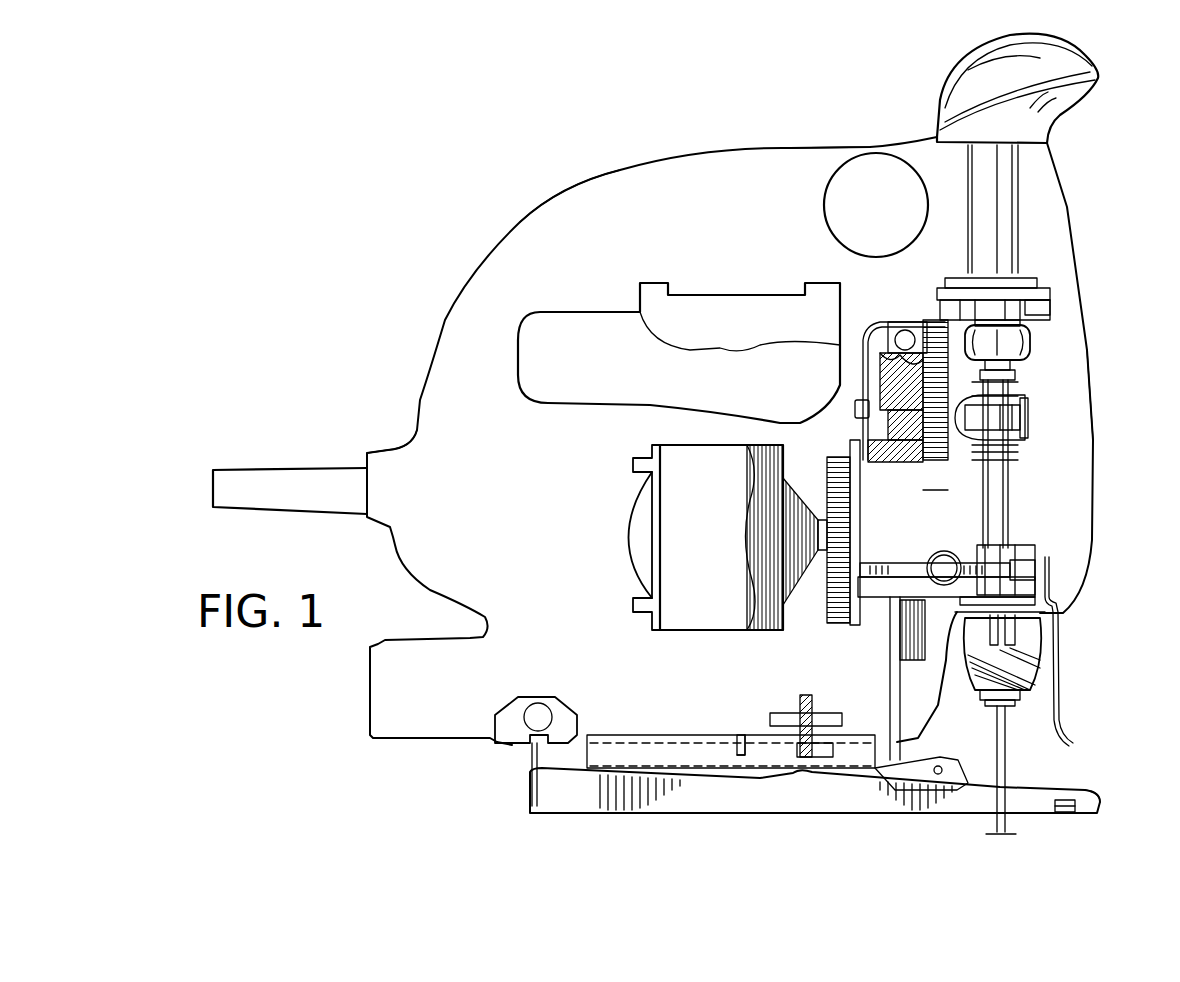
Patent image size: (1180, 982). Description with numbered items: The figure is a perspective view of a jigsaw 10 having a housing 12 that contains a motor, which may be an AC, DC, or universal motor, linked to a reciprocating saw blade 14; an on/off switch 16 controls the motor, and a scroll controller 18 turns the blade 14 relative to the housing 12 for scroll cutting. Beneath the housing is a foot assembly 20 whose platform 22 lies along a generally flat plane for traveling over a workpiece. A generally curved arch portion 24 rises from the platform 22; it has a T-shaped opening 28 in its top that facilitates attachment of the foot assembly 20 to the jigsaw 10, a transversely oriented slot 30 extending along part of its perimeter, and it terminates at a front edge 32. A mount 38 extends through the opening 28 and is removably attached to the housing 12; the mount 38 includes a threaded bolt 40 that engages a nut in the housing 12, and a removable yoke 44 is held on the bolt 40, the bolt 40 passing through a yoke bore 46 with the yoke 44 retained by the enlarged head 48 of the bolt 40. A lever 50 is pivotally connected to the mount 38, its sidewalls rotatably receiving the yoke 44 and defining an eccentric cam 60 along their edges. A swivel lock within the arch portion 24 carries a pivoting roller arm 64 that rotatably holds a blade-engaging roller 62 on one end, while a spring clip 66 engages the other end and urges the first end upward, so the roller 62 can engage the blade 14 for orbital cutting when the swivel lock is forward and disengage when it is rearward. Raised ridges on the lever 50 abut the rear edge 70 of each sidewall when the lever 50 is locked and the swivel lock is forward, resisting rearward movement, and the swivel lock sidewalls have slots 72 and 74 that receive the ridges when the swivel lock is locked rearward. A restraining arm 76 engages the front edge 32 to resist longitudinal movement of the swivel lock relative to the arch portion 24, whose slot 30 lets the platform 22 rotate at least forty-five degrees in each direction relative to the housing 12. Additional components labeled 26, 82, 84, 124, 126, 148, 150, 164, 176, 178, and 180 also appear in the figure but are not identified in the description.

The jigsaw 10 is at (455, 200).
The housing 12 is at (1067, 207).
The reciprocating saw blade 14 is at (790, 148).
The on/off switch 16 is at (670, 203).
The scroll controller 18 is at (697, 325).
The foot assembly 20 is at (512, 745).
The platform 22 is at (725, 800).
The arch portion 24 is at (1093, 425).
The saw blade 26 is at (1000, 735).
The T-shaped opening 28 is at (388, 448).
The transversely oriented slot 30 is at (265, 478).
The front edge 32 is at (728, 537).
The mount 38 is at (838, 627).
The threaded bolt 40 is at (1005, 512).
The removable yoke 44 is at (895, 340).
The yoke bore 46 is at (950, 320).
The enlarged head 48 is at (955, 495).
The lever 50 is at (883, 340).
The eccentric cam 60 is at (885, 755).
The blade-engaging roller 62 is at (1020, 412).
The pivoting roller arm 64 is at (1035, 402).
The spring clip 66 is at (1015, 453).
The rear edge 70 is at (1025, 630).
The slot 72 is at (943, 818).
The slot 74 is at (1098, 800).
The restraining arm 76 is at (622, 740).
The pivot lever 82 is at (957, 758).
The shoe rear edge 84 is at (990, 762).
The adjustment screw 124 is at (803, 697).
The screw slot 126 is at (760, 718).
The roller guide bracket 148 is at (1017, 537).
The crank arm 150 is at (880, 600).
The link arm 164 is at (952, 600).
The dial shaft 176 is at (1005, 228).
The dial plate 178 is at (1045, 297).
The cam drum 180 is at (1030, 310).